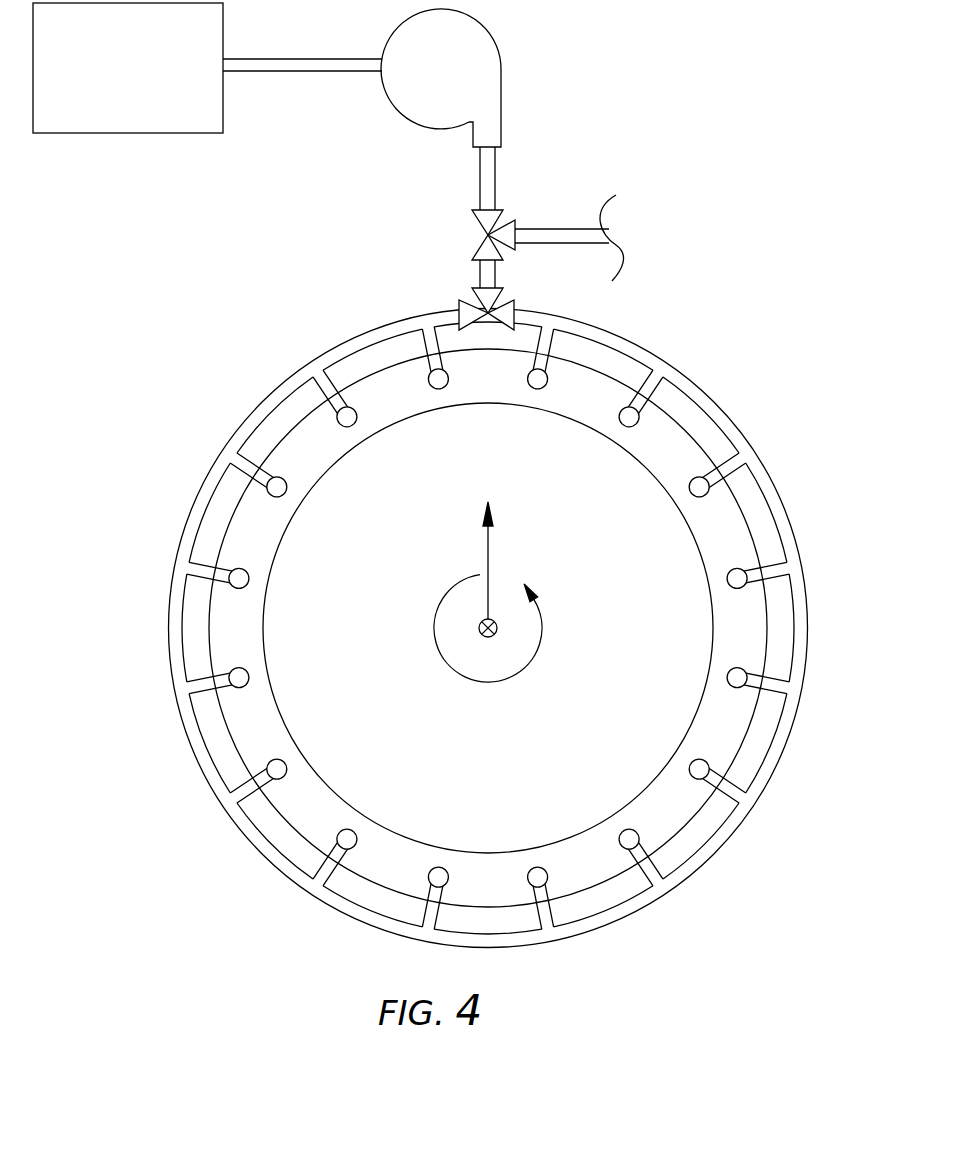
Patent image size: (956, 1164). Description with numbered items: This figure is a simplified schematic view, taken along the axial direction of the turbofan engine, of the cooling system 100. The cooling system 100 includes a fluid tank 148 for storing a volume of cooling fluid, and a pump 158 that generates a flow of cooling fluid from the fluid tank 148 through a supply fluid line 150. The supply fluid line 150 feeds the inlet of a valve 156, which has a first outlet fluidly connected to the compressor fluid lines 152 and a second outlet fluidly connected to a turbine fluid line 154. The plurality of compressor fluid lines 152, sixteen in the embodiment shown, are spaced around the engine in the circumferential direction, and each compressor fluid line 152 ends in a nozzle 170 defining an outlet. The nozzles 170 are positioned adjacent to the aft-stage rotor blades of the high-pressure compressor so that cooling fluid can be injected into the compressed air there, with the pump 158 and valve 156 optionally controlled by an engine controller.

The cooling system 100 is at (660, 132).
The fluid tank 148 is at (145, 80).
The supply fluid line 150 is at (480, 178).
The compressor fluid line 152 is at (480, 277).
The turbine fluid line 154 is at (560, 233).
The valve 156 is at (458, 235).
The pump 158 is at (483, 55).
The nozzle 170 is at (242, 585).